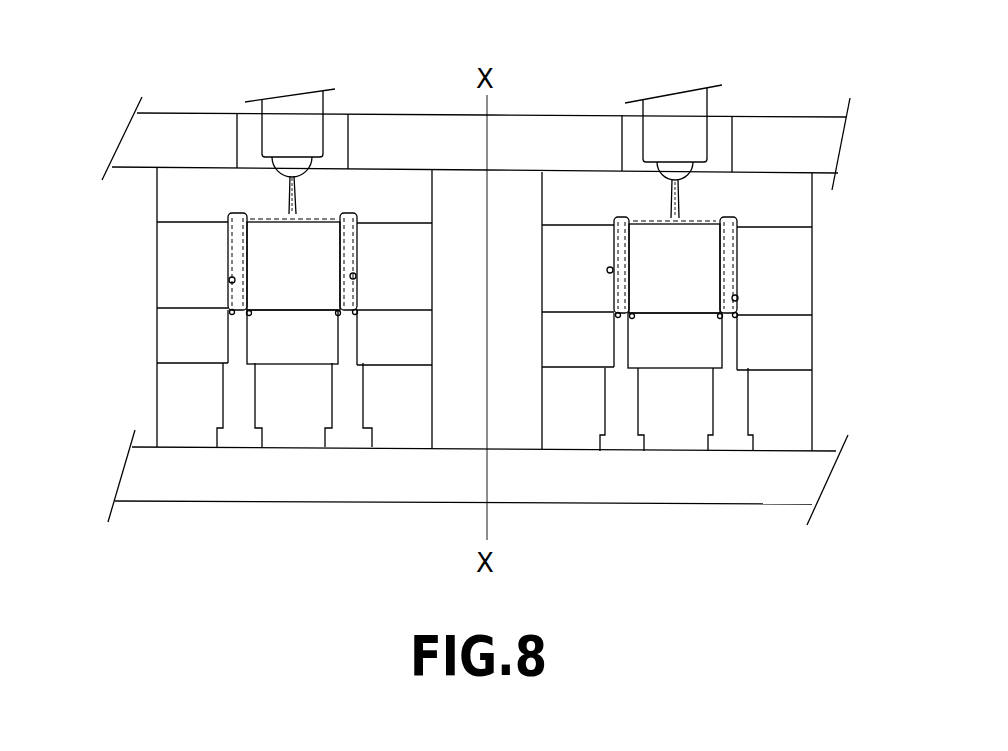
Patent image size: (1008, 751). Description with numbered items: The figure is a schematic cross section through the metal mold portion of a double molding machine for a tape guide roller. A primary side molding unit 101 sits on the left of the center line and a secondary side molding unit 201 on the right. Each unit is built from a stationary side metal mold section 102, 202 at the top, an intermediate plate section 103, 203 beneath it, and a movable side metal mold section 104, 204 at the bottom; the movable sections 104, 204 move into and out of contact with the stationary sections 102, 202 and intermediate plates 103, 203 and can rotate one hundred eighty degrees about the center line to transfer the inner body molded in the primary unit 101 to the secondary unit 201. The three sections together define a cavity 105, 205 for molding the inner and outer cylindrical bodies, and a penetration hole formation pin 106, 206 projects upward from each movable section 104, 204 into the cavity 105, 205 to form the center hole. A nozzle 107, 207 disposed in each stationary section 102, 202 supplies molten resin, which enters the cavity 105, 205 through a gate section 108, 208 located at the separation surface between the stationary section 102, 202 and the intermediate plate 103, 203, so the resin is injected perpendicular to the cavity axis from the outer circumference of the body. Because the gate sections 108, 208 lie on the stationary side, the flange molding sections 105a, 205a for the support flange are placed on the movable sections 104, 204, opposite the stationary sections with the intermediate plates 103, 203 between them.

The primary side molding unit 101 is at (115, 95).
The stationary side metal mold section 102 is at (170, 198).
The intermediate plate section 103 is at (168, 267).
The movable side metal mold section 104 is at (167, 332).
The cavity 105 is at (232, 280).
The flange molding section 105a is at (230, 312).
The penetration hole formation pin 106 is at (230, 235).
The nozzle 107 is at (333, 103).
The gate section 108 is at (247, 212).
The secondary side molding unit 201 is at (812, 88).
The stationary side metal mold section 202 is at (797, 207).
The intermediate plate section 203 is at (797, 285).
The movable side metal mold section 204 is at (797, 343).
The cavity 205 is at (610, 268).
The flange molding section 205a is at (612, 315).
The penetration hole formation pin 206 is at (617, 231).
The nozzle 207 is at (695, 105).
The gate section 208 is at (640, 222).